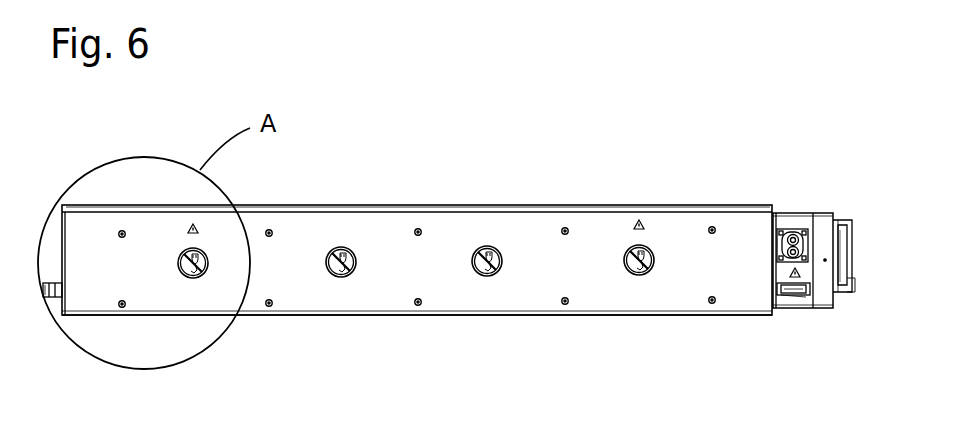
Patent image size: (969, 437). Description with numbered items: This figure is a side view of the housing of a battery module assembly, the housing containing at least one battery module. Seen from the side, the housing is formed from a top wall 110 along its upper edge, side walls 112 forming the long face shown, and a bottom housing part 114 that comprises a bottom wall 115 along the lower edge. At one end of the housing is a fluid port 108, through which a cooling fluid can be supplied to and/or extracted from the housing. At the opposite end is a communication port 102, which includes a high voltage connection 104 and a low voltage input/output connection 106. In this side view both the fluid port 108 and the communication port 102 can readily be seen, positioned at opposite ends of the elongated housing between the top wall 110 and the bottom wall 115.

The communication port 102 is at (833, 213).
The high voltage connection 104 is at (797, 229).
The low voltage input/output connection 106 is at (796, 297).
The fluid port 108 is at (50, 299).
The top wall 110 is at (653, 208).
The side walls 112 is at (555, 260).
The bottom housing part 114 is at (613, 311).
The bottom wall 115 is at (663, 314).